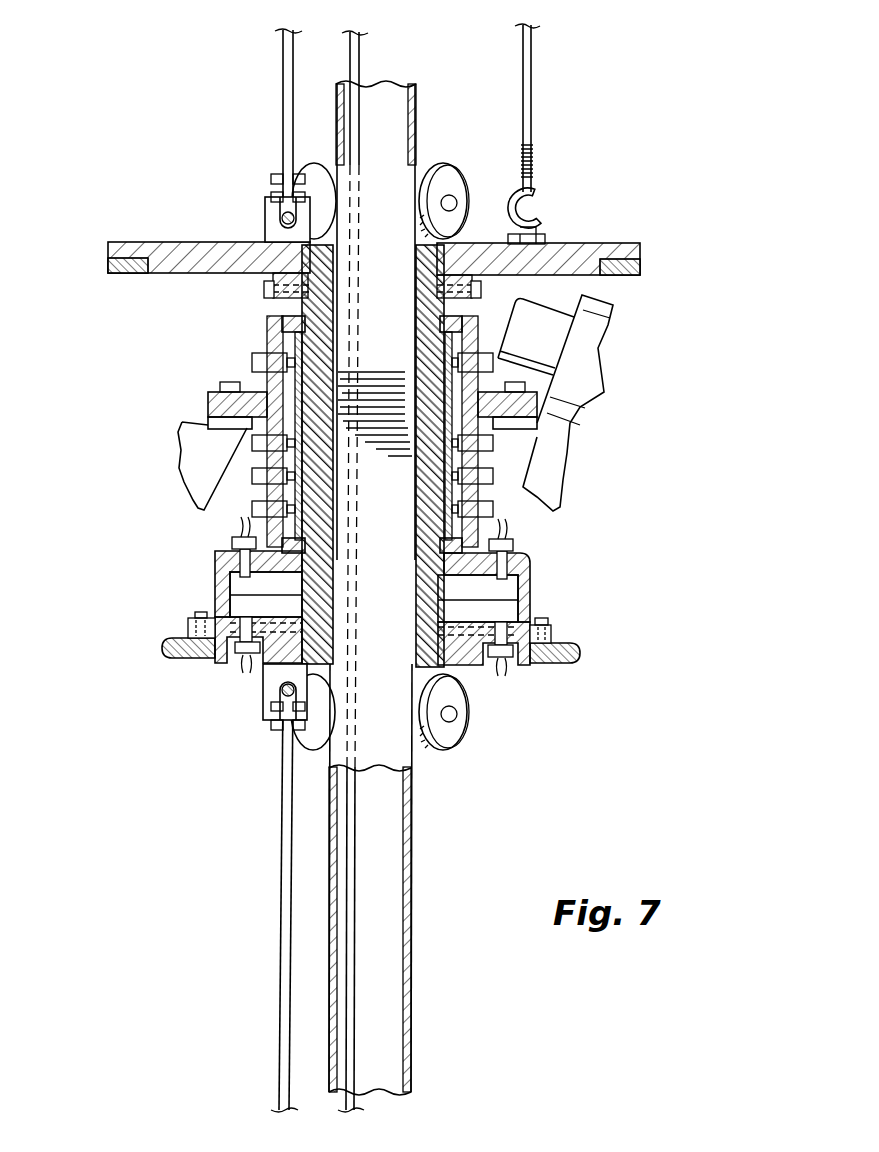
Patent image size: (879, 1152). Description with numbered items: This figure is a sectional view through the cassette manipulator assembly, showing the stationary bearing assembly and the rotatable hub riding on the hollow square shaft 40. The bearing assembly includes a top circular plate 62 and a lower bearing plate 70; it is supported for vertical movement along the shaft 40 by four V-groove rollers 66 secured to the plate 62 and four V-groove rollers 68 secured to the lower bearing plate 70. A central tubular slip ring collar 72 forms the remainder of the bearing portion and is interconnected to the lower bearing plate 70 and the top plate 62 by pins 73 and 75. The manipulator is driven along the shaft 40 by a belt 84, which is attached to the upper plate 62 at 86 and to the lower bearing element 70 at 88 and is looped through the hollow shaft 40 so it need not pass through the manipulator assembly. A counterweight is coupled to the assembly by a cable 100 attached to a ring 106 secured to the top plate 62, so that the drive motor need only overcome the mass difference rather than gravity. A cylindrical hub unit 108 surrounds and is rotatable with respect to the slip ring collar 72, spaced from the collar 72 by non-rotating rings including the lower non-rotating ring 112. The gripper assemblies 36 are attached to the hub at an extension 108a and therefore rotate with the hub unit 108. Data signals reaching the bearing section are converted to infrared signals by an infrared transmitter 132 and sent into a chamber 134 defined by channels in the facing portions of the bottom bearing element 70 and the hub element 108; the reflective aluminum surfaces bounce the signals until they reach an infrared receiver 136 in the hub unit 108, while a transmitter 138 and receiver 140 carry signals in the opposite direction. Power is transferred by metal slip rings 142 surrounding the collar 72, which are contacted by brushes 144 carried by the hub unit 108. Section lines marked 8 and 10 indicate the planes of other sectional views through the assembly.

The square shaft 40 is at (411, 838).
The belt 84 is at (282, 53).
The V-groove rollers 66 is at (315, 165).
The V-groove rollers 68 is at (302, 747).
The belt attachment point 86 is at (265, 205).
The belt attachment point 88 is at (263, 700).
The top circular plate 62 is at (149, 242).
The gripper assemblies 36 is at (582, 295).
The pin 75 is at (264, 288).
The cable 100 is at (533, 70).
The ring 106 is at (541, 190).
The slip rings 142 is at (303, 370).
The brushes 144 is at (258, 353).
The extension 108a is at (222, 382).
The cylindrical hub unit 108 is at (530, 592).
The lower non-rotating ring 112 is at (303, 548).
The chamber 134 is at (374, 597).
The slip ring collar 72 is at (440, 614).
The lower bearing plate 70 is at (478, 665).
The transmitter 138 is at (232, 543).
The infrared receiver 136 is at (513, 545).
The receiver 140 is at (220, 663).
The infrared transmitter 132 is at (508, 668).
The pin 73 is at (188, 628).
The section line 8- 8 is at (156, 597).
The section line 10- 10 is at (78, 298).